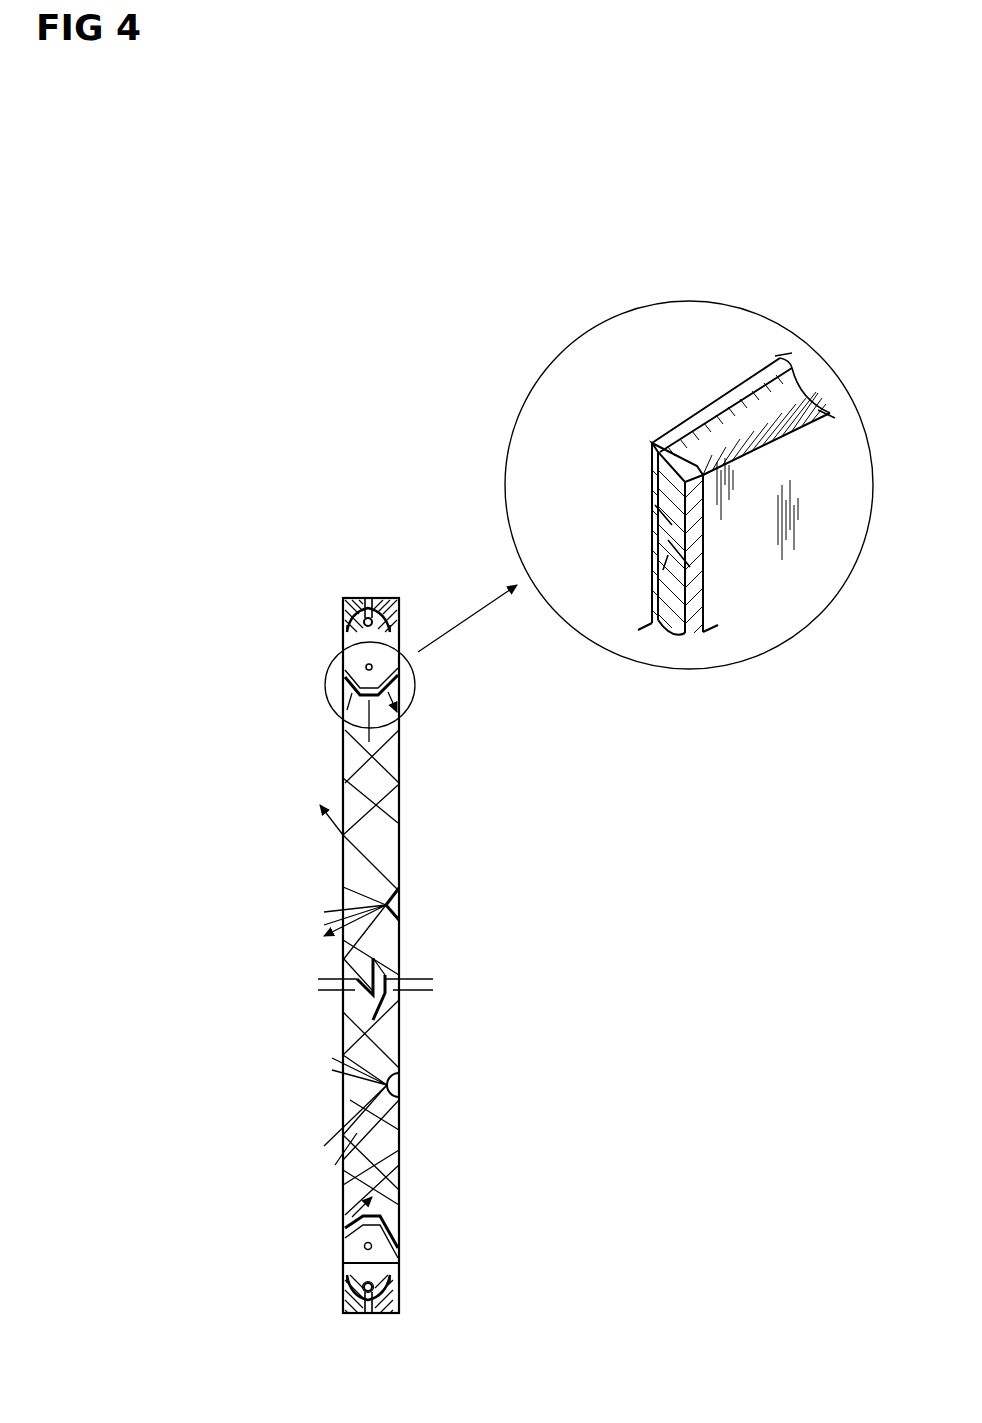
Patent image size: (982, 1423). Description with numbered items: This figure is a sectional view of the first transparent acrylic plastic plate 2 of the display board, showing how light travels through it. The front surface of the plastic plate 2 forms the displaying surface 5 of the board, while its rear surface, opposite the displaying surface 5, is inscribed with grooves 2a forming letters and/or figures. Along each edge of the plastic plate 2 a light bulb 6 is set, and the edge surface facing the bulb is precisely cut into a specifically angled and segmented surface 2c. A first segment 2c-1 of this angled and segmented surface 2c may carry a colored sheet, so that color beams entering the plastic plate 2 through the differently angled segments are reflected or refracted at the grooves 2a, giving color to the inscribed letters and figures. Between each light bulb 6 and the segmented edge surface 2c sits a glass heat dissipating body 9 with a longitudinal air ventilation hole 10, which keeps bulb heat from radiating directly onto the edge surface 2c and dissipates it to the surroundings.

The first transparent acrylic plastic plate 2 is at (385, 760).
The grooves 2a is at (395, 905).
The angled and segmented edge surface 2c is at (382, 1217).
The first segment 2c-1 is at (655, 468).
The displaying surface 5 is at (343, 750).
The light bulb 6 is at (365, 1290).
The heat dissipating body 9 is at (383, 1258).
The air ventilation hole 10 is at (366, 1244).